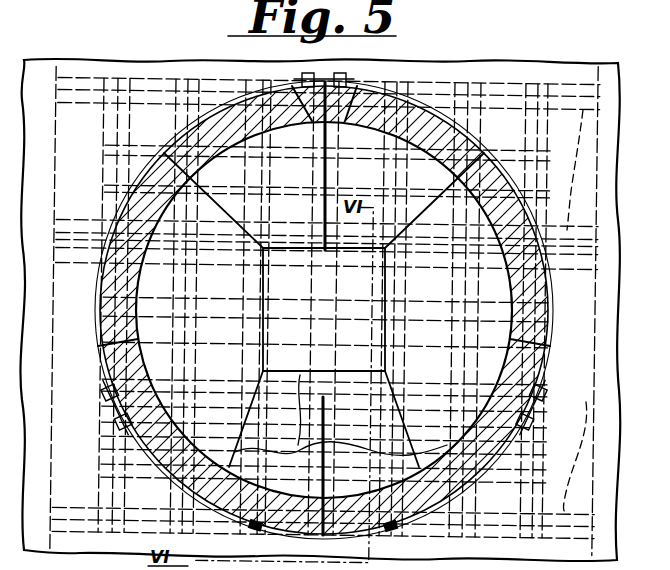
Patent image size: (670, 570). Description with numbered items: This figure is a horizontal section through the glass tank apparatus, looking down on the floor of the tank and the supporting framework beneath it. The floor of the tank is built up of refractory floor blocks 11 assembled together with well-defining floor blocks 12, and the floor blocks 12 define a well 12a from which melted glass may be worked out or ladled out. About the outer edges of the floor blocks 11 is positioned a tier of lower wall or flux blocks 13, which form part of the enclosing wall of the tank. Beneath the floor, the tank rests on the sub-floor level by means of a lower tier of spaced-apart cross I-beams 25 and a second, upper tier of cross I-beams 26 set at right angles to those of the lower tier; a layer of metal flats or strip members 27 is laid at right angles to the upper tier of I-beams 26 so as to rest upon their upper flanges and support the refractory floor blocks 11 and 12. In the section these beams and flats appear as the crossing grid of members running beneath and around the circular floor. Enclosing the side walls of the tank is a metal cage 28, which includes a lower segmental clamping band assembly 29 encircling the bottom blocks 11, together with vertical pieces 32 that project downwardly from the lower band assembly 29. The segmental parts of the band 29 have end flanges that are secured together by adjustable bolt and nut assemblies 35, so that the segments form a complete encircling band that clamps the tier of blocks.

The refractory floor blocks 11 is at (324, 226).
The well-defining floor blocks 12 is at (325, 439).
The well 12a is at (341, 453).
The lower wall or flux blocks 13 is at (136, 290).
The cross I-beams 25 is at (320, 310).
The cross I-beams 26 is at (428, 97).
The metal flats or strip members 27 is at (342, 123).
The metal cage 28 is at (140, 165).
The segmental clamping band assembly 29 is at (548, 297).
The vertical pieces 32 is at (182, 151).
The adjustable bolt and nut assemblies 35 is at (300, 72).